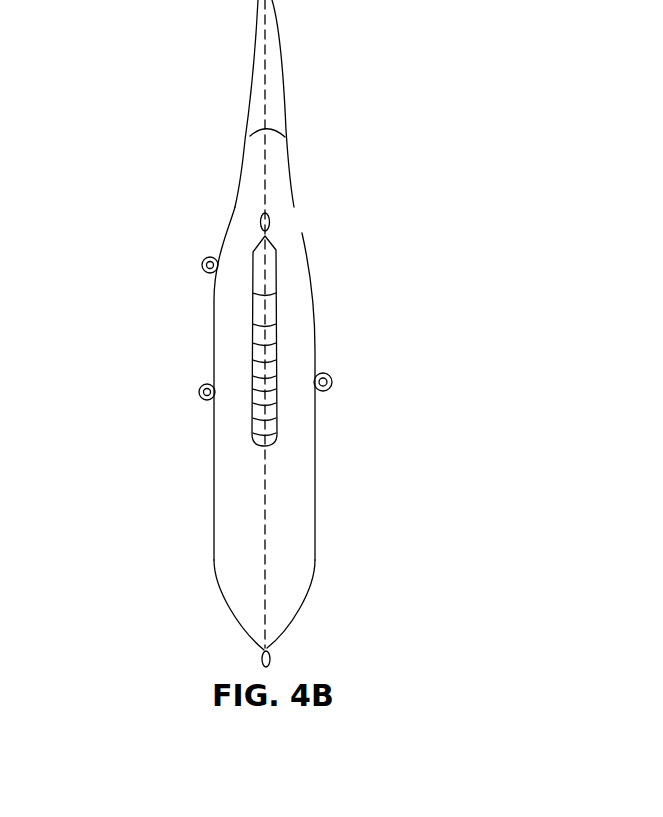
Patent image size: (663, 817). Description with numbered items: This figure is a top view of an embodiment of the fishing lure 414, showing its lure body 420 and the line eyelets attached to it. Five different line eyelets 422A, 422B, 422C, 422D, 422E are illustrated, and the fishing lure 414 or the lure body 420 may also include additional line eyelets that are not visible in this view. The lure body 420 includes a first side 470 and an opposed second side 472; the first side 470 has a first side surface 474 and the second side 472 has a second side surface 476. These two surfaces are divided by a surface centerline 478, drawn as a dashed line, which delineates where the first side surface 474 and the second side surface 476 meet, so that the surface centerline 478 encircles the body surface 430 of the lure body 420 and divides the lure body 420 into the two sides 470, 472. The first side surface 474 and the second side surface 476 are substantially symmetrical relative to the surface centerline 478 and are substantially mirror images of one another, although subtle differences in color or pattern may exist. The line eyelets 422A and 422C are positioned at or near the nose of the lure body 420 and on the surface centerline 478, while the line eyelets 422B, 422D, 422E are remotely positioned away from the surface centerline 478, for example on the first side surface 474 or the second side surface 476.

The fishing lure 414 is at (186, 216).
The lure body 420 is at (258, 325).
The line eyelet 422A is at (275, 674).
The line eyelet 422B is at (197, 394).
The line eyelet 422C is at (270, 221).
The line eyelet 422D is at (197, 268).
The line eyelet 422E is at (338, 386).
The body surface 430 is at (290, 418).
The first side 470 is at (232, 485).
The second side 472 is at (297, 465).
The first side surface 474 is at (215, 540).
The second side surface 476 is at (315, 515).
The surface centerline 478 is at (263, 207).